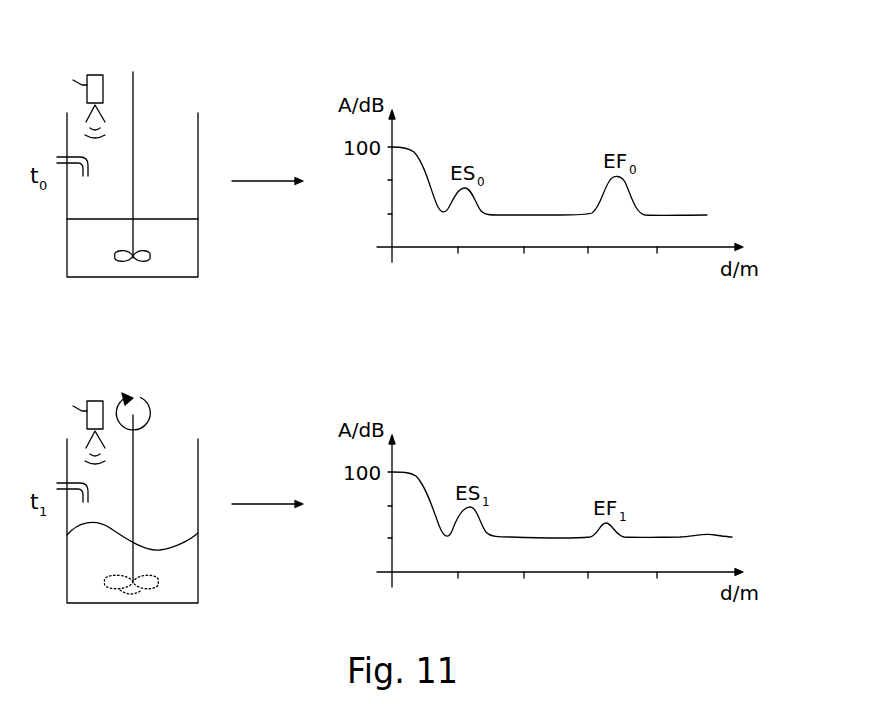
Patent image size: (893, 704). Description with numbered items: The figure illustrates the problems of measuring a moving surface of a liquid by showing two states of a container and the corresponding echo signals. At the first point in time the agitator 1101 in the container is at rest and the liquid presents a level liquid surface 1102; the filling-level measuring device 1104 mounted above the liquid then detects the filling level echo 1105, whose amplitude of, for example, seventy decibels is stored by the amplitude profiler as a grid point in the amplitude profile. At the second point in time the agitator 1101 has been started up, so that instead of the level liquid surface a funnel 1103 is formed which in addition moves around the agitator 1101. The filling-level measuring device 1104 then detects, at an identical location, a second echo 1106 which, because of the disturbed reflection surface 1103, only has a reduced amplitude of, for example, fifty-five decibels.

The agitator 1101 is at (134, 112).
The level liquid surface 1102 is at (147, 218).
The funnel 1103 is at (142, 543).
The filling-level measuring device 1104 is at (92, 76).
The filling level echo EF0 1105 is at (617, 140).
The echo EF1 1106 is at (607, 490).